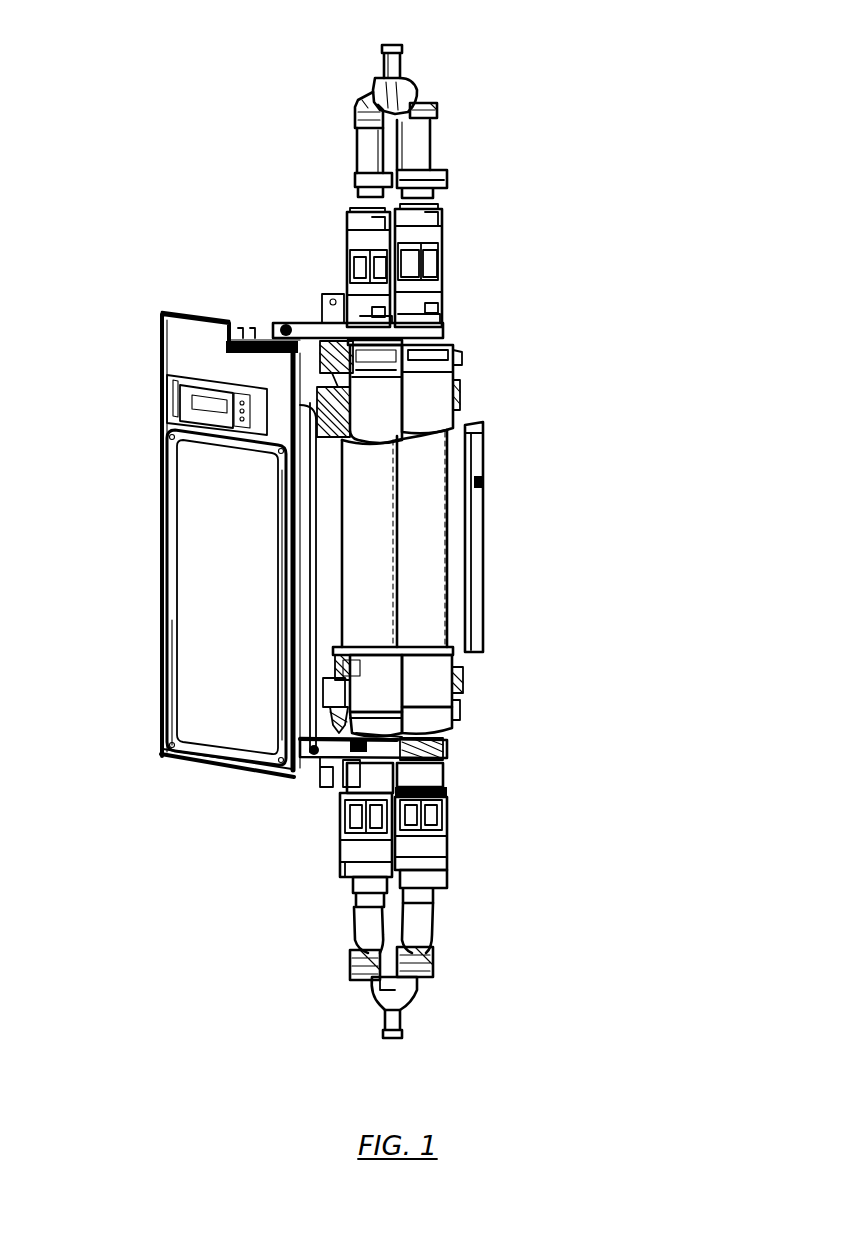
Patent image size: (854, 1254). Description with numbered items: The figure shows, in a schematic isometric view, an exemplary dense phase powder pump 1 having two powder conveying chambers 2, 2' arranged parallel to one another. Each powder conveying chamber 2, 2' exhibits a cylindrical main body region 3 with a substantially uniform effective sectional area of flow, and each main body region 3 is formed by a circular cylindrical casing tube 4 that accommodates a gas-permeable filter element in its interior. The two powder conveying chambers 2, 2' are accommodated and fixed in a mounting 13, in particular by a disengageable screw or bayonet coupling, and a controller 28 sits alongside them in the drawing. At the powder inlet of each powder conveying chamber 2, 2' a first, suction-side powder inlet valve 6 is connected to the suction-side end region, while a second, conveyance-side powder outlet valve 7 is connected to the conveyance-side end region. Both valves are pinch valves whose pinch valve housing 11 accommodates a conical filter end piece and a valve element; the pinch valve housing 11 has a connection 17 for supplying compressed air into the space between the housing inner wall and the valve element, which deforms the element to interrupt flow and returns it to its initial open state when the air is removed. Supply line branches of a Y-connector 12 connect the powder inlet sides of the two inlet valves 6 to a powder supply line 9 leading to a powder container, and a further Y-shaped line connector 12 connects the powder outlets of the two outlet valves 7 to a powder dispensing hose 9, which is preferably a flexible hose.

The dense phase powder pump 1 is at (130, 109).
The powder conveying chamber 2 is at (512, 517).
The powder conveying chamber 2' is at (507, 539).
The main body region 3 is at (425, 492).
The casing tube 4 is at (512, 517).
The powder inlet valve 6 is at (362, 852).
The powder outlet valve 7 is at (357, 238).
The powder supply line 9 is at (392, 65).
The pinch valve housing 11 is at (394, 530).
The Y-connector 12 is at (407, 92).
The mounting 13 is at (475, 581).
The connection 17 is at (450, 800).
The controller 28 is at (215, 510).